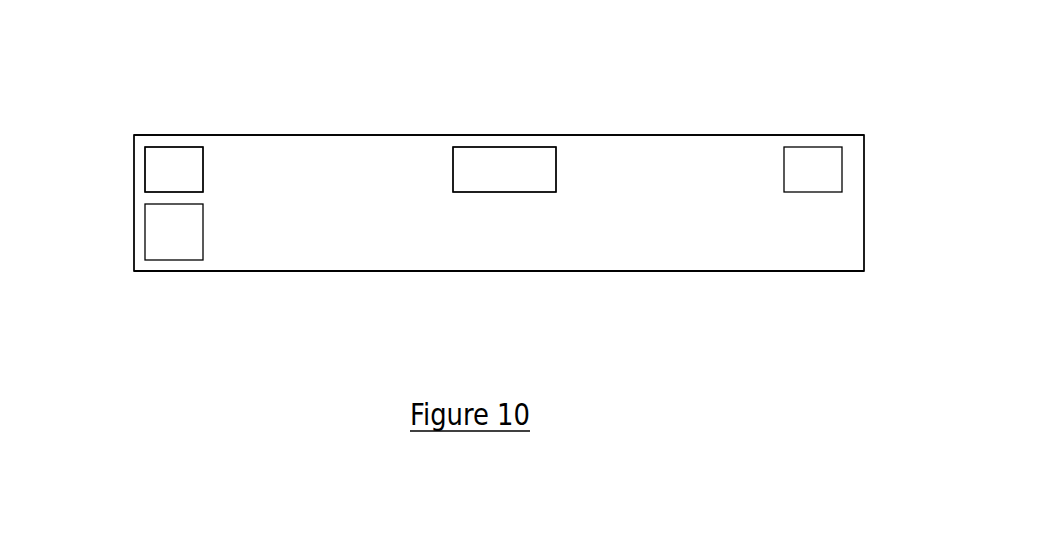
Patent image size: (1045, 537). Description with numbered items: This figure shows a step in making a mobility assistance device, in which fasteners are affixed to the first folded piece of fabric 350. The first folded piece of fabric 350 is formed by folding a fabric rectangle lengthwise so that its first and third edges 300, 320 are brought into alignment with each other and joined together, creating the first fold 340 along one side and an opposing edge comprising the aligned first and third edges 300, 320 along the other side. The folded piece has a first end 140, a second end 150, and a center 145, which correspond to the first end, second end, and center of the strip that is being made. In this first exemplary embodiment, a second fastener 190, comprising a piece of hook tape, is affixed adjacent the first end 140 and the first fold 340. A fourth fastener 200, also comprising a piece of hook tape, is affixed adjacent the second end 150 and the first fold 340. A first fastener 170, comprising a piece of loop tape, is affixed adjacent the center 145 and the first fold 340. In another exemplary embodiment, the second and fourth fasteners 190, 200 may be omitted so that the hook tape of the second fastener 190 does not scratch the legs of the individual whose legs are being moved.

The second end 150 is at (841, 237).
The first fold 340 is at (635, 135).
The first end 140 is at (147, 192).
The first fastener 170 is at (168, 168).
The second fastener 190 is at (168, 226).
The center 145 is at (510, 215).
The fourth fastener 200 is at (817, 169).
The first edge 300 is at (728, 271).
The third edge 320 is at (762, 271).
The first folded piece of fabric 350 is at (263, 346).